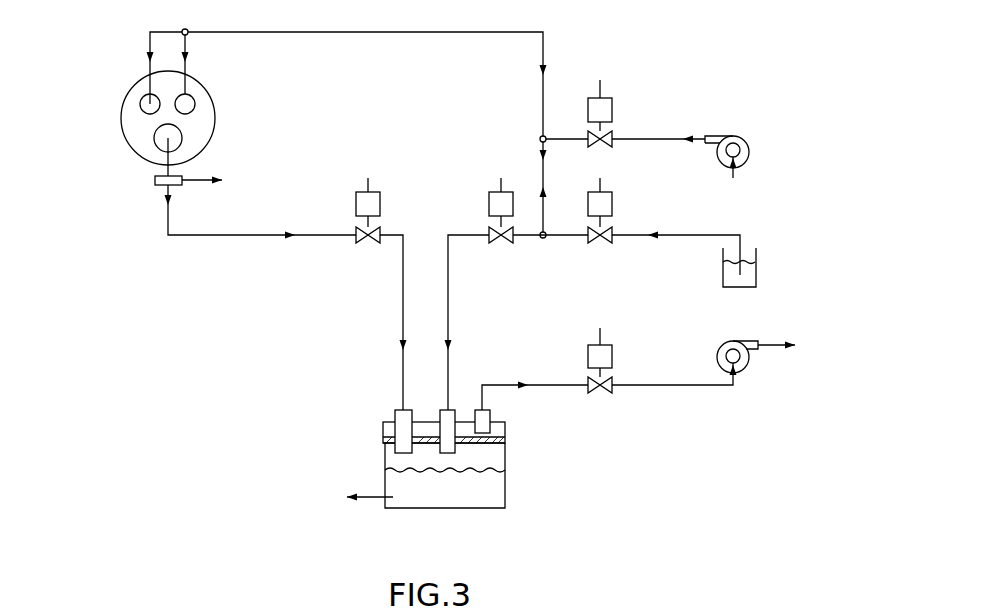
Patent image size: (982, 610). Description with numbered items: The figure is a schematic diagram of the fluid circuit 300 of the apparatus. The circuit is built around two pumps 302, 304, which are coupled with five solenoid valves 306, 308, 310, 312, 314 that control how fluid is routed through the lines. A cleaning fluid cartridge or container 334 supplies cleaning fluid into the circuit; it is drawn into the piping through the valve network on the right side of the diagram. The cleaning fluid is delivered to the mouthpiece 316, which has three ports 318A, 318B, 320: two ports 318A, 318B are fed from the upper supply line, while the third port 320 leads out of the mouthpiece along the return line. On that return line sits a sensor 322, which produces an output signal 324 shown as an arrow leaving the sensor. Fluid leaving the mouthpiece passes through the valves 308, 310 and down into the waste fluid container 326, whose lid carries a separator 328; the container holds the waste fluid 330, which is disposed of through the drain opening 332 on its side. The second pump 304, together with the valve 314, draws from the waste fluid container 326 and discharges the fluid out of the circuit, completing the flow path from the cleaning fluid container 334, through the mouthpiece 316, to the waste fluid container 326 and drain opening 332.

The fluid circuit 300 is at (172, 376).
The pump 302 is at (746, 131).
The pump 304 is at (748, 370).
The solenoid valve 306 is at (610, 97).
The solenoid valve 308 is at (370, 178).
The solenoid valve 310 is at (501, 178).
The solenoid valve 312 is at (613, 213).
The solenoid valve 314 is at (604, 332).
The mouthpiece 316 is at (123, 138).
The port 318A is at (140, 104).
The port 318B is at (196, 104).
The port 320 is at (183, 145).
The sensor 322 is at (153, 181).
The output signal 324 is at (200, 185).
The waste fluid container 326 is at (383, 426).
The separator 328 is at (506, 445).
The waste fluid 330 is at (495, 493).
The drain opening 332 is at (375, 499).
The cleaning fluid cartridge or container 334 is at (757, 280).